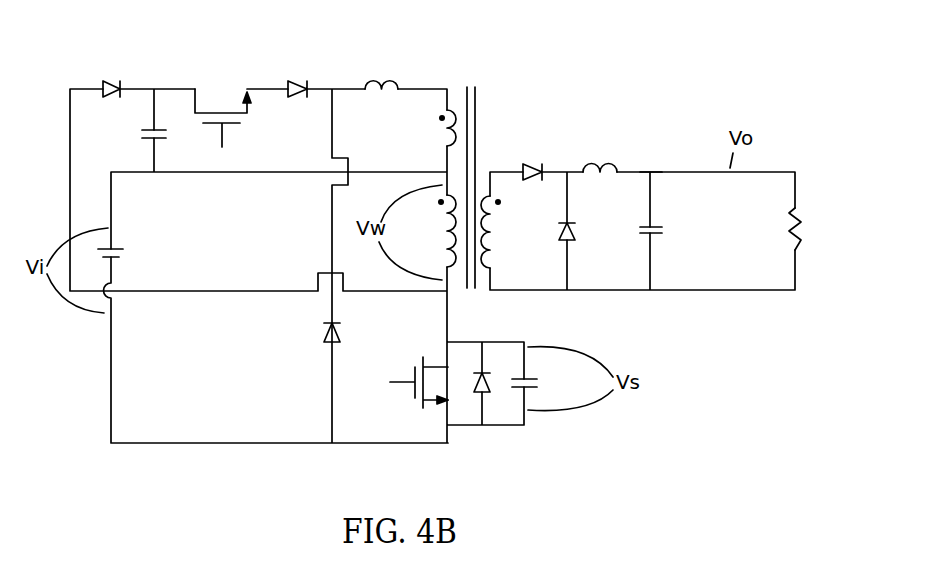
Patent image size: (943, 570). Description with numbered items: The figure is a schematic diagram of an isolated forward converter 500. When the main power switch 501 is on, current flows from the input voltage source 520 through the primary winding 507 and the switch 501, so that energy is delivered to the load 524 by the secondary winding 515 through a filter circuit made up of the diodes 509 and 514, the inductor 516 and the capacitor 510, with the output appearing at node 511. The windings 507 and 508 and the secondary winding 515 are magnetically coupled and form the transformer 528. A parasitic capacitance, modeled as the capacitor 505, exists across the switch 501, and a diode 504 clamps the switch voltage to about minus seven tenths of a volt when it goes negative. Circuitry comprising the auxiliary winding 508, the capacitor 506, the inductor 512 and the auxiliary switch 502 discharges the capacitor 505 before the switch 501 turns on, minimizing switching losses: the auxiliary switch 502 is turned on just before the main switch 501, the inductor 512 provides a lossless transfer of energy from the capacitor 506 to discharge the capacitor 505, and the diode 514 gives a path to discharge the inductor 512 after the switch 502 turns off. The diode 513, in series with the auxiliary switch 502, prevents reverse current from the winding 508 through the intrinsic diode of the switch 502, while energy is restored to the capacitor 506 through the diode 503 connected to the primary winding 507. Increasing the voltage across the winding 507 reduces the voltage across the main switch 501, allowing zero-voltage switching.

The converter 500 is at (577, 85).
The main power switch 501 is at (407, 380).
The auxiliary switch 502 is at (222, 95).
The diode 503 is at (108, 77).
The diode 504 is at (487, 393).
The capacitor 505 is at (537, 382).
The capacitor 506 is at (140, 132).
The winding 507 is at (450, 255).
The auxiliary winding 508 is at (447, 138).
The diode 509 is at (533, 162).
The capacitor 510 is at (667, 232).
The output node 511 is at (668, 168).
The inductor 512 is at (379, 78).
The diode 513 is at (298, 77).
The diode 514 is at (322, 332).
The secondary winding 515 is at (492, 240).
The inductor 516 is at (596, 162).
The input voltage source 520 is at (125, 255).
The load 524 is at (802, 223).
The transformer 528 is at (478, 97).